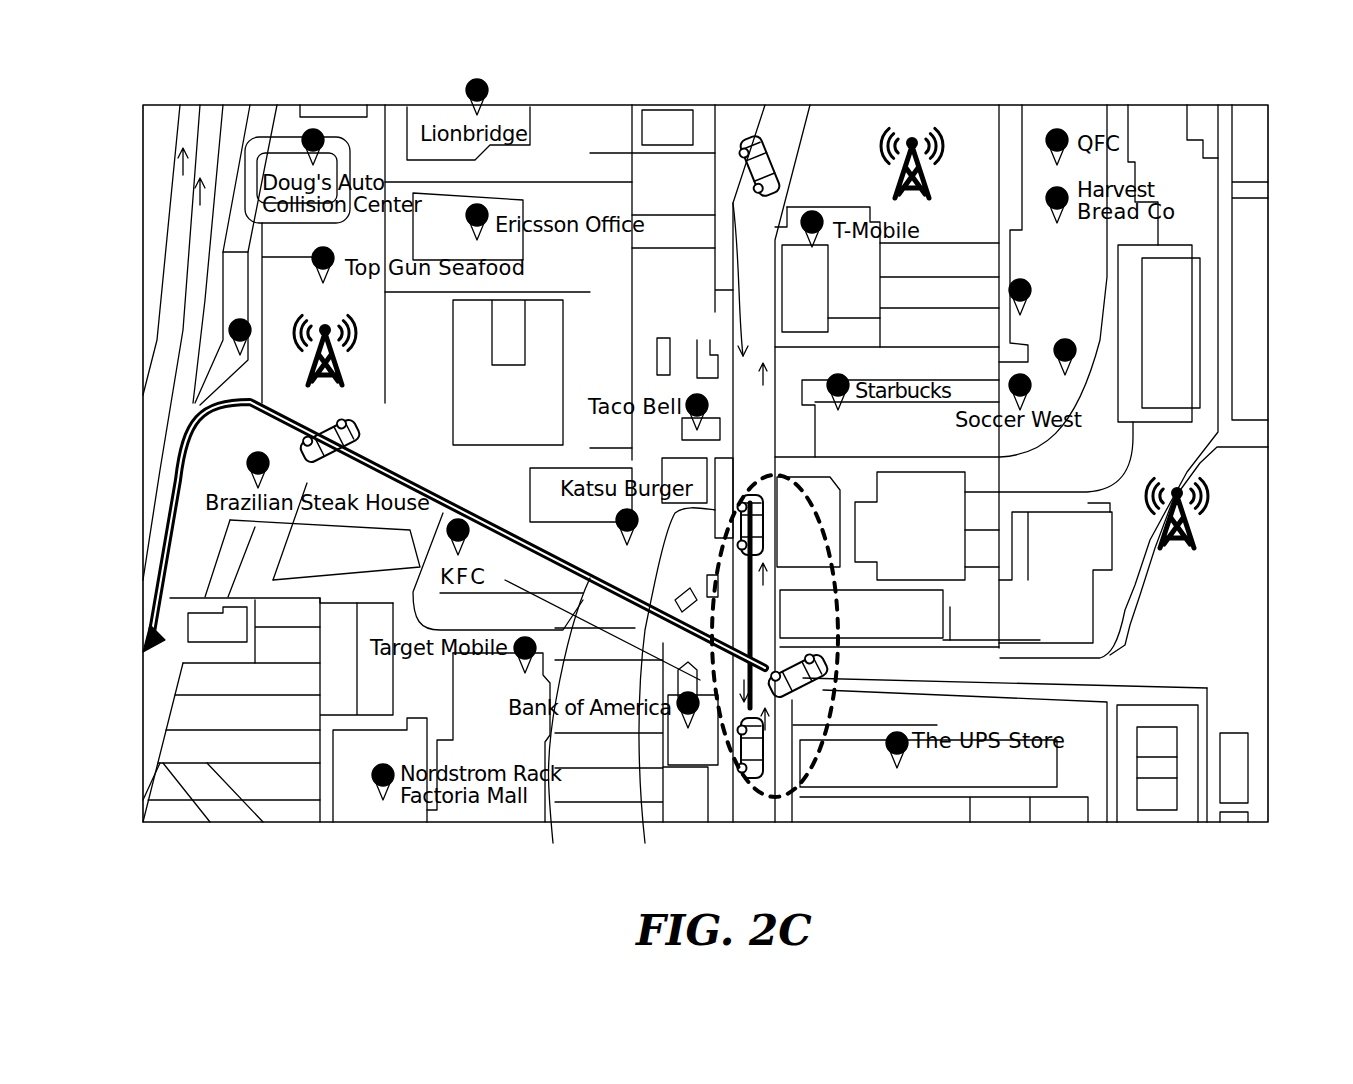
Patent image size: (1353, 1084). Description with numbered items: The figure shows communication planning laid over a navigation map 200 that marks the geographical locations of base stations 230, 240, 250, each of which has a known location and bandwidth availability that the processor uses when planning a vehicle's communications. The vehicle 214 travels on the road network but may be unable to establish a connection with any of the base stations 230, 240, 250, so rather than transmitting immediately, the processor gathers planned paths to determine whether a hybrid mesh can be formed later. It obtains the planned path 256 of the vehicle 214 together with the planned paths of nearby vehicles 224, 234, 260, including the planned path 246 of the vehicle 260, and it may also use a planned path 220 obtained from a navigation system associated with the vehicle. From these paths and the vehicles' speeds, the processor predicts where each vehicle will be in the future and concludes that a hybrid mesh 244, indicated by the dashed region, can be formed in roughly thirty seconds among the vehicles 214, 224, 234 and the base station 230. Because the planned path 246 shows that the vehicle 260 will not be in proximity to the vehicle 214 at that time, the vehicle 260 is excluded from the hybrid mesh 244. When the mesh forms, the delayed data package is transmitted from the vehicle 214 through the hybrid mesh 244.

The map 200 is at (143, 110).
The vehicle 214 is at (790, 677).
The planned path 220 is at (664, 686).
The nearby vehicle 224 is at (733, 203).
The base station 230 is at (313, 360).
The nearby vehicle 234 is at (757, 787).
The base station 240 is at (912, 140).
The hybrid mesh 244 is at (803, 787).
The planned path 246 is at (148, 640).
The base station 250 is at (1203, 570).
The planned path 256 is at (572, 722).
The nearby vehicle 260 is at (237, 407).